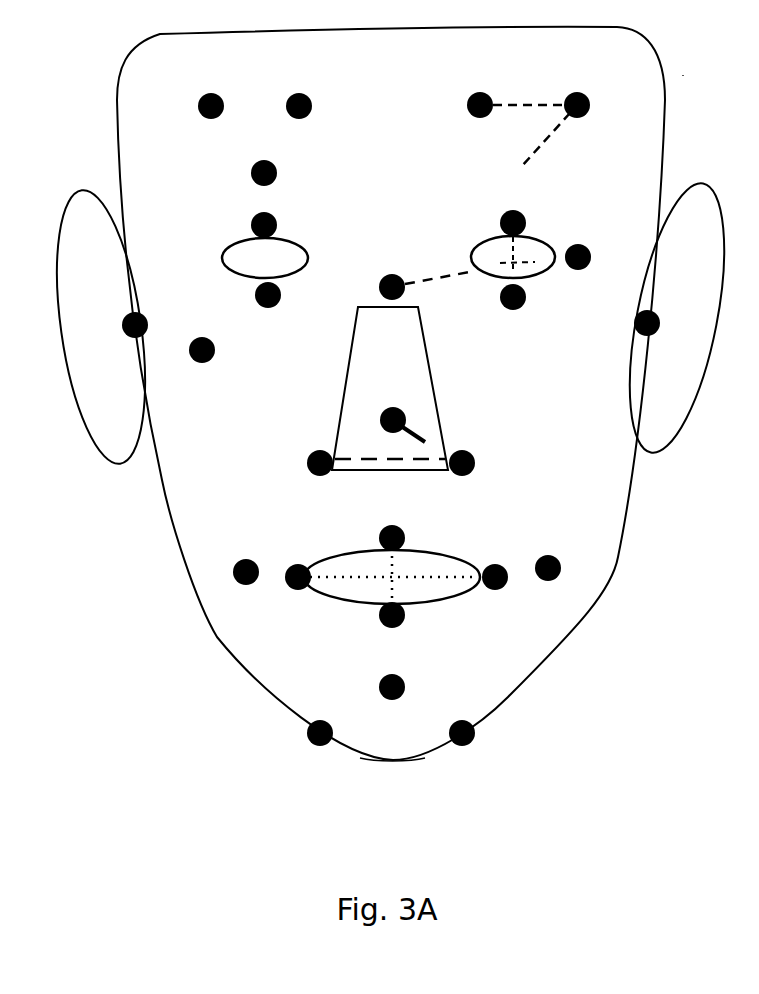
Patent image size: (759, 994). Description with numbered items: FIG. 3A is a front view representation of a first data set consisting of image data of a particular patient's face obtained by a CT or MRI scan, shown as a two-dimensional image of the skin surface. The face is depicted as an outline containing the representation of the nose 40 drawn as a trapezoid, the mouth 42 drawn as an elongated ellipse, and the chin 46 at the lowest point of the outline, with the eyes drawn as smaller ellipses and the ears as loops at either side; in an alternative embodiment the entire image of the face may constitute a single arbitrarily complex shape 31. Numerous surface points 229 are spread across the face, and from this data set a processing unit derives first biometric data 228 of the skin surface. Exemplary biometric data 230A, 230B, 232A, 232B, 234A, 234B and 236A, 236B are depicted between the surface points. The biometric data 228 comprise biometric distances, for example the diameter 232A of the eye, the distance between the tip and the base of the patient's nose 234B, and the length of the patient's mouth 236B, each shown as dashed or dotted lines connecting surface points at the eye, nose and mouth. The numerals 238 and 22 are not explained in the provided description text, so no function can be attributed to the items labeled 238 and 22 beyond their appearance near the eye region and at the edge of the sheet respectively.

The single arbitrarily complex shape 31 is at (391, 393).
The nose 40 is at (345, 372).
The mouth 42 is at (652, 455).
The chin 46 is at (397, 768).
The first biometric data 228 is at (483, 138).
The surface points 229 is at (467, 97).
The biometric data 230A is at (547, 140).
The biometric data 230B is at (520, 102).
The diameter of the eye 232A is at (535, 280).
The biometric data 232B is at (412, 283).
The biometric data 234A is at (362, 458).
The distance between tip and base of the nose 234B is at (420, 432).
The biometric data 236A is at (395, 595).
The length of the mouth 236B is at (362, 575).
The eye region 238 is at (540, 240).
The head model 22 is at (683, 75).